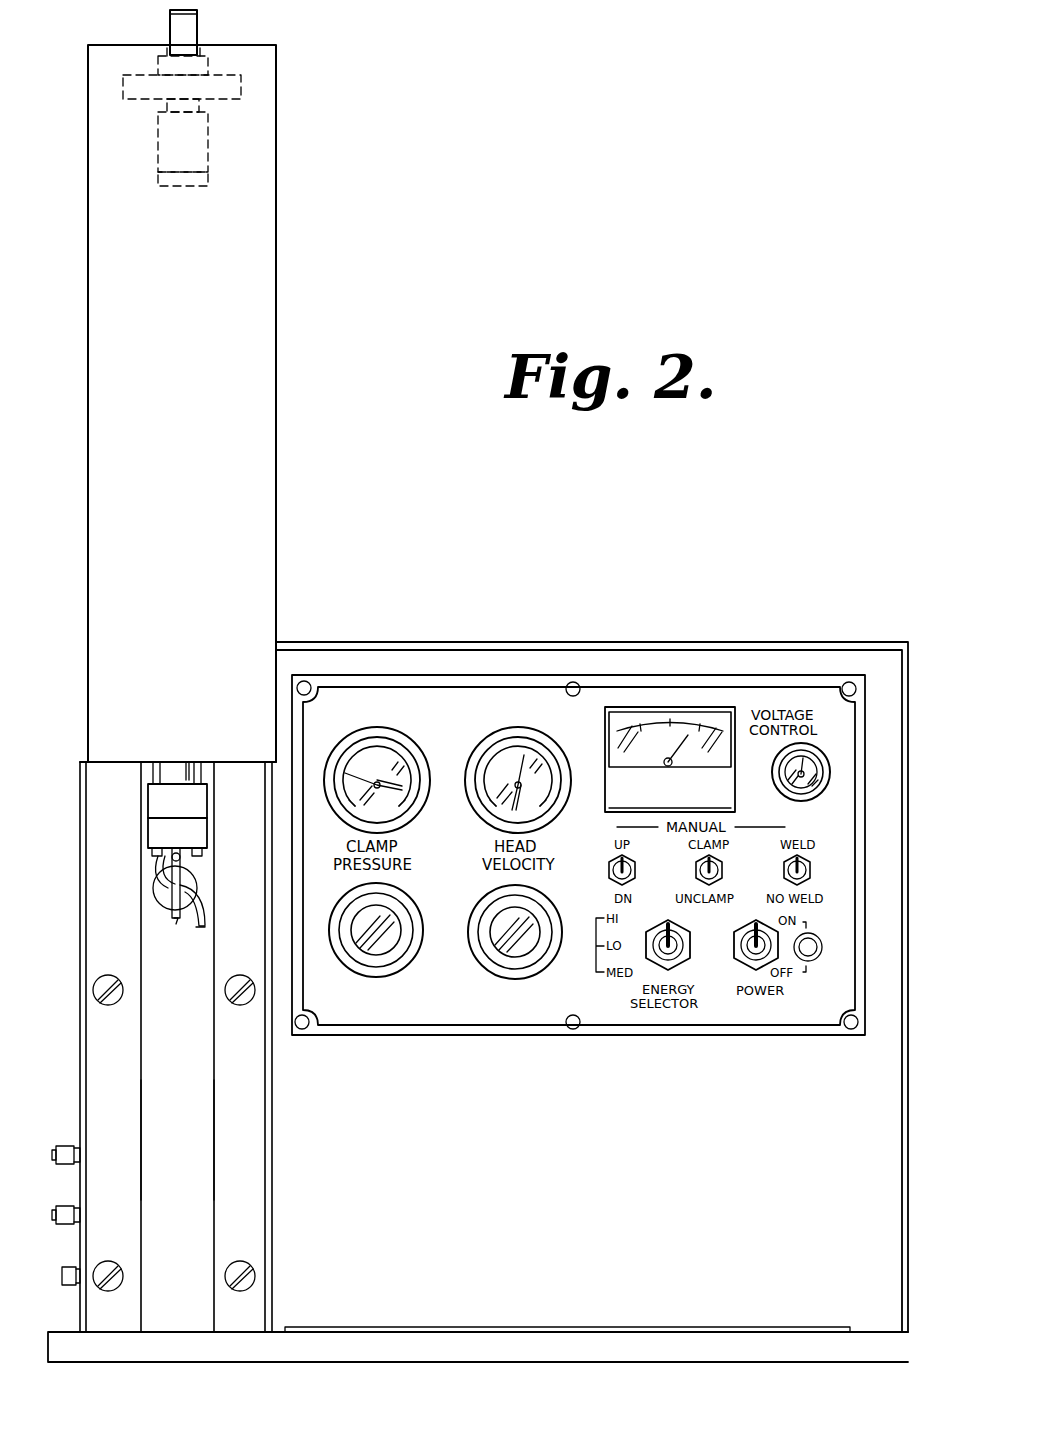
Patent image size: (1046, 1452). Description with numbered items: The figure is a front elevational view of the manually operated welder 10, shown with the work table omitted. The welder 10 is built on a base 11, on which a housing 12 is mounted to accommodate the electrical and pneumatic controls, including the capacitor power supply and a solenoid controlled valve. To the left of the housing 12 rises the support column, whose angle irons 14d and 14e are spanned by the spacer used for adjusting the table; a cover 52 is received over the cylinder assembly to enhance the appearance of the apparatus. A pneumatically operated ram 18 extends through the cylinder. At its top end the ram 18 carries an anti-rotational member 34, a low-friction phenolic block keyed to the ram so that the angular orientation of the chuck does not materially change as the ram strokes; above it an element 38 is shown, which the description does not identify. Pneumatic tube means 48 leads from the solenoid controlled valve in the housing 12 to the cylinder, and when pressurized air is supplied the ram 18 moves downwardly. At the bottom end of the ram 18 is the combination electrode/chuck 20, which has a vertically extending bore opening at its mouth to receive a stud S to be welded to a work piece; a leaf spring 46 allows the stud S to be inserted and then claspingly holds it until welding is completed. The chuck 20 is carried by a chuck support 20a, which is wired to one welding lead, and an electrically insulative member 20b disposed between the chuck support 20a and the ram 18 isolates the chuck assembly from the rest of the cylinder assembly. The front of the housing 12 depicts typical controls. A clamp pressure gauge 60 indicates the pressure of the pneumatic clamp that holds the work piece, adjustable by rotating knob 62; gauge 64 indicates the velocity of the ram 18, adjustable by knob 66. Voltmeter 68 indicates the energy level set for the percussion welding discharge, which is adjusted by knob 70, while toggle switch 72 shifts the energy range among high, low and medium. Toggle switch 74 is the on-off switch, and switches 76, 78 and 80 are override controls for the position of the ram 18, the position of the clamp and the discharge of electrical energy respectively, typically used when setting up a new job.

The welder 10 is at (313, 247).
The base 11 is at (372, 1365).
The housing 12 is at (907, 915).
The angle iron 14d is at (130, 1131).
The angle iron 14e is at (220, 1196).
The ram 18 is at (182, 182).
The combination electrode/chuck 20 is at (148, 836).
The chuck support 20a is at (160, 836).
The electrically insulative member 20b is at (160, 807).
The anti-rotational member 34 is at (145, 88).
The stud 38 is at (197, 24).
The leaf spring 46 is at (178, 875).
The pneumatic tube means 48 is at (200, 912).
The cover 52 is at (268, 596).
The clamp pressure gauge 60 is at (390, 738).
The knob 62 is at (398, 908).
The gauge 64 is at (562, 724).
The knob 66 is at (496, 950).
The voltmeter 68 is at (650, 768).
The knob 70 is at (832, 771).
The toggle switch 72 is at (676, 932).
The toggle switch 74 is at (748, 950).
The override switch 76 is at (610, 866).
The override switch 78 is at (696, 870).
The override switch 80 is at (784, 870).
The stud S is at (172, 920).